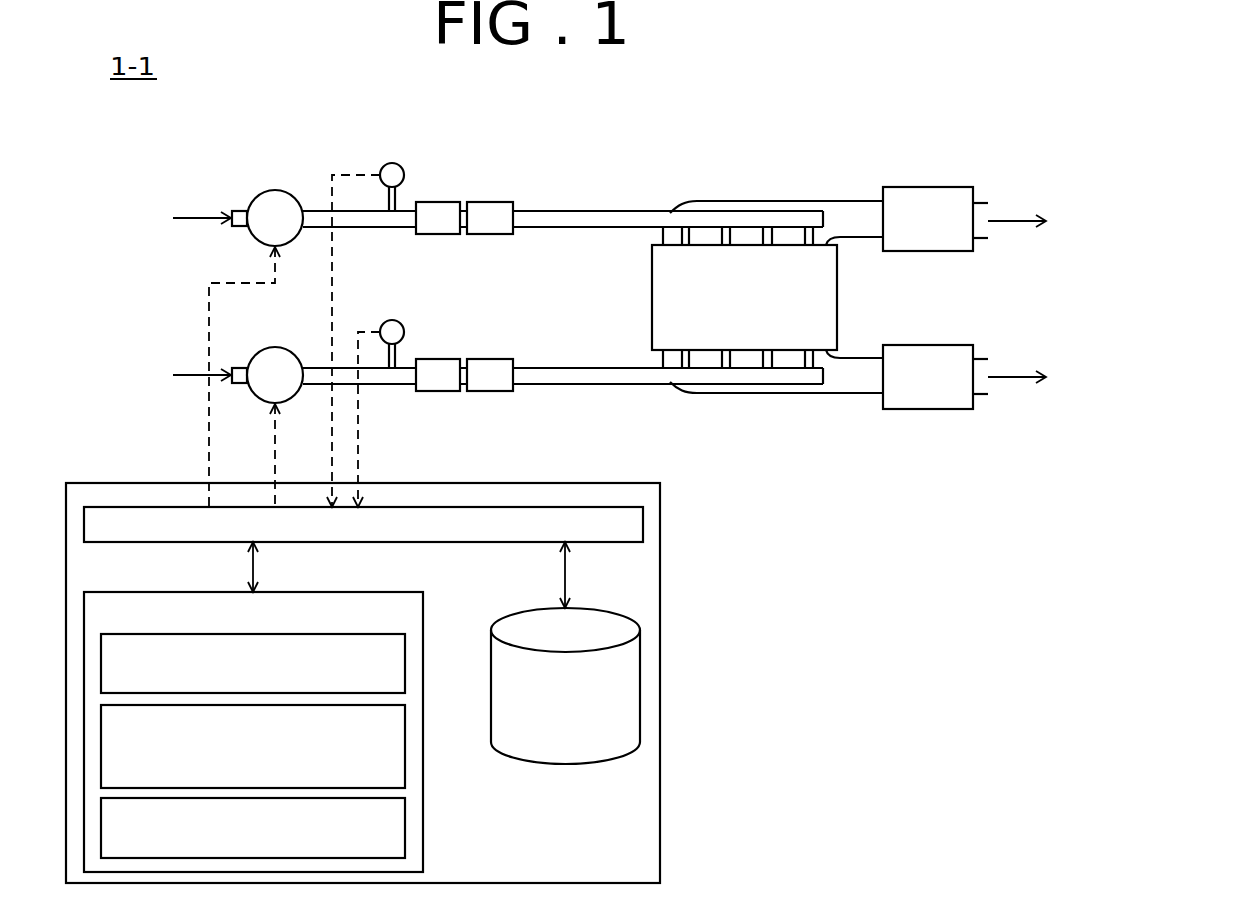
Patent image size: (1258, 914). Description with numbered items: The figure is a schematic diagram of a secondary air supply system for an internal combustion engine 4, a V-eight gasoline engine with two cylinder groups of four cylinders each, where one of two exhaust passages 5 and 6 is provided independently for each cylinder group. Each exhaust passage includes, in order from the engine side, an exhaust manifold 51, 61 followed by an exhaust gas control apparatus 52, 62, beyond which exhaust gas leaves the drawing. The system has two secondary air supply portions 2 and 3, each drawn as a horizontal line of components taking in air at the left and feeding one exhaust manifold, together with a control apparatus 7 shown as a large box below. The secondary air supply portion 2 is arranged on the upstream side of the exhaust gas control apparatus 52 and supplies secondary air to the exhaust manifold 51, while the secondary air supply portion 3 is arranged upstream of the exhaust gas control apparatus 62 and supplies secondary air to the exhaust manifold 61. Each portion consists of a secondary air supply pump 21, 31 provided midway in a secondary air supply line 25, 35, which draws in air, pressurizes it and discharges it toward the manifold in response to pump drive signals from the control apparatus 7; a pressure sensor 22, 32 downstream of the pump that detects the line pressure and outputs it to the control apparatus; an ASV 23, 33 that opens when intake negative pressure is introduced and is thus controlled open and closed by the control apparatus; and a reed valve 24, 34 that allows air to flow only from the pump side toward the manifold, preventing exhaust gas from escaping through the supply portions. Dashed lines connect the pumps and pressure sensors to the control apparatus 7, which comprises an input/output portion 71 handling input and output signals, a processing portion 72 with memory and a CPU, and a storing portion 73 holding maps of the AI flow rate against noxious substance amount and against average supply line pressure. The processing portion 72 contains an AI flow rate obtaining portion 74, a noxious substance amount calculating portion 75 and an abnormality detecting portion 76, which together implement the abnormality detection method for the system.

The secondary air supply portion 2 is at (546, 147).
The secondary air supply portion 3 is at (564, 397).
The internal combustion engine 4 is at (651, 288).
The exhaust passage 5 is at (880, 145).
The exhaust passage 6 is at (860, 413).
The control apparatus 7 is at (617, 477).
The secondary air supply pump 21 is at (275, 188).
The pressure sensor 22 is at (392, 162).
The ASV (air switching valve) 23 is at (440, 201).
The reed valve 24 is at (494, 201).
The secondary air supply line 25 is at (312, 209).
The secondary air supply pump 31 is at (275, 346).
The pressure sensor 32 is at (392, 320).
The ASV (air switching valve) 33 is at (440, 358).
The reed valve 34 is at (494, 358).
The secondary air supply line 35 is at (312, 366).
The exhaust manifold 51 is at (843, 200).
The exhaust gas control apparatus 52 is at (938, 186).
The exhaust manifold 61 is at (794, 394).
The exhaust gas control apparatus 62 is at (936, 410).
The input/output portion (I/O) 71 is at (643, 527).
The processing portion 72 is at (404, 591).
The storing portion 73 is at (604, 607).
The AI flow rate obtaining portion 74 is at (405, 665).
The noxious substance amount calculating portion 75 is at (405, 747).
The abnormality detecting portion 76 is at (405, 830).